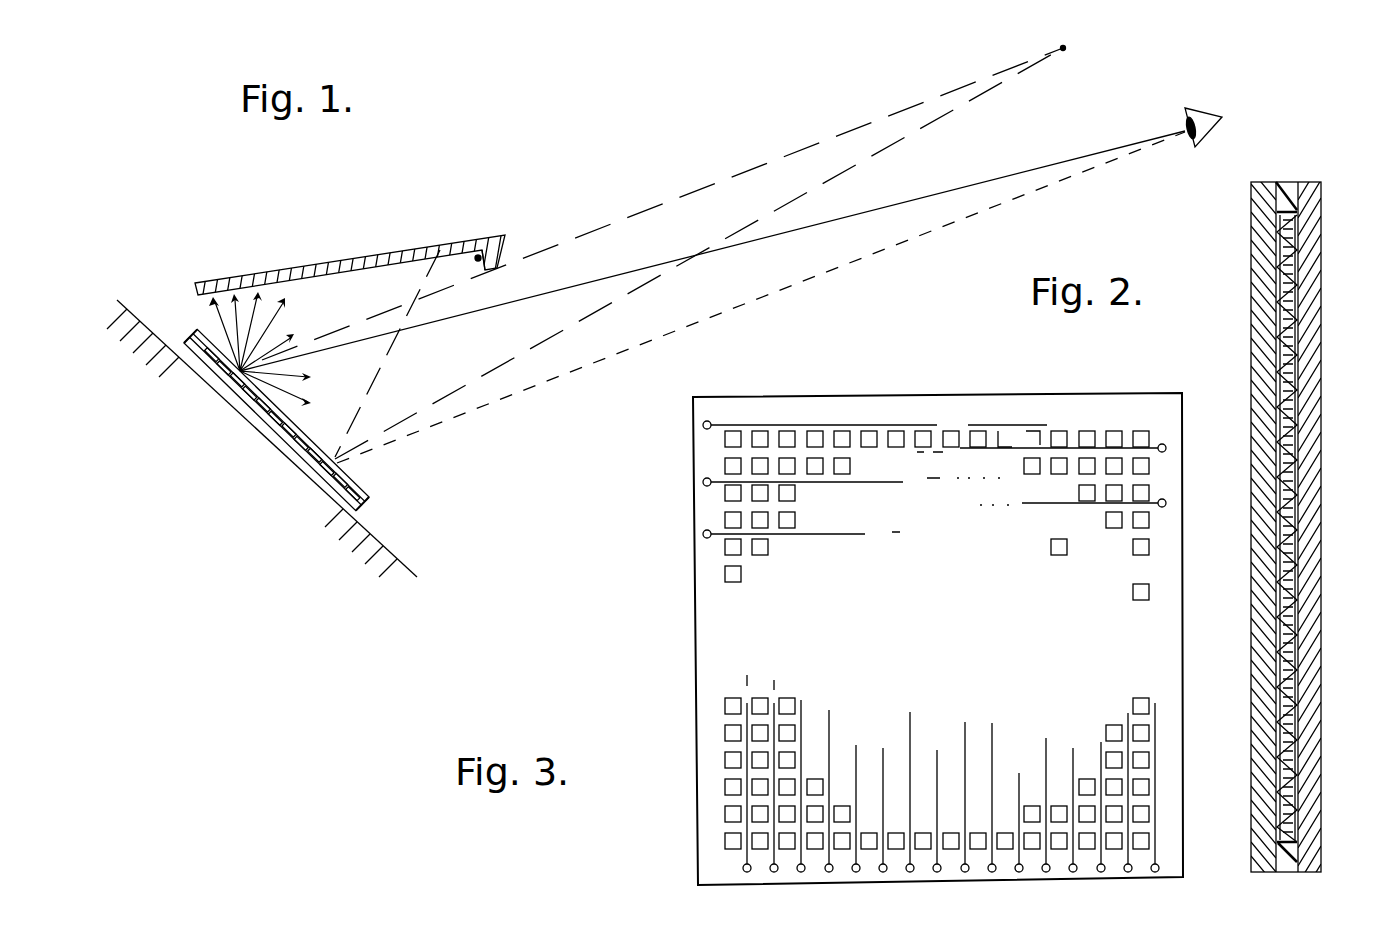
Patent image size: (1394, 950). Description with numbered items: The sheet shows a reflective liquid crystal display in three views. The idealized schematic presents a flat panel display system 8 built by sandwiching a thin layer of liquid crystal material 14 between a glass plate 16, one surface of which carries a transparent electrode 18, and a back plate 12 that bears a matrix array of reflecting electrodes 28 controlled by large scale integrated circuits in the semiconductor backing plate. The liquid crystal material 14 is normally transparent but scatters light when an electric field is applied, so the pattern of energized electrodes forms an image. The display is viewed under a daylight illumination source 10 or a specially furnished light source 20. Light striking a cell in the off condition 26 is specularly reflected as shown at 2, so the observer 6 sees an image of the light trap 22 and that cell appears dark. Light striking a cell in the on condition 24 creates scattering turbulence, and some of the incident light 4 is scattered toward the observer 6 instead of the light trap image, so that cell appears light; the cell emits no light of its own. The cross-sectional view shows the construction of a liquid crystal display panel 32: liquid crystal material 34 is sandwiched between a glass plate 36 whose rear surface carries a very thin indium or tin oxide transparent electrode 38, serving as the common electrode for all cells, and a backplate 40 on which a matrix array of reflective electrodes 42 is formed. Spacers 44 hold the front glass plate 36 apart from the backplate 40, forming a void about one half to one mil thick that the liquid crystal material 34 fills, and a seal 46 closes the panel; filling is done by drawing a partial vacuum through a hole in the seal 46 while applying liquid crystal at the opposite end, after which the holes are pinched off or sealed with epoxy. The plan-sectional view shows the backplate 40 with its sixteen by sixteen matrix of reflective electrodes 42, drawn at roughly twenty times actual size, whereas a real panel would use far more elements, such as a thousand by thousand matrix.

In FIG. 1, the specularly reflected light 2 is at (815, 282).
In FIG. 1, the incident light 4 is at (945, 192).
In FIG. 1, the observer 6 is at (1205, 115).
In FIG. 1, the flat panel display system 8 is at (690, 170).
In FIG. 1, the daylight illumination source 10 is at (1063, 48).
In FIG. 1, the back plate 12 is at (290, 453).
In FIG. 1, the liquid crystal material 14 is at (197, 335).
In FIG. 1, the glass plate 16 is at (317, 435).
In FIG. 1, the transparent electrode 18 is at (362, 495).
In FIG. 1, the specially furnished light source 20 is at (487, 248).
In FIG. 1, the light trap 22 is at (345, 266).
In FIG. 1, the cell in the on condition 24 is at (230, 375).
In FIG. 1, the cell in the off condition 26 is at (312, 472).
In FIG. 1, the reflecting electrodes 28 is at (257, 423).
In FIG. 2, the liquid crystal display panel 32 is at (1340, 318).
In FIG. 2, the liquid crystal material 34 is at (1277, 338).
In FIG. 2, the glass plate 36 is at (1255, 230).
In FIG. 2, the transparent electrode 38 is at (1275, 538).
In FIG. 2, the backplate 40 is at (1321, 420).
In FIG. 3, the backplate 40 is at (694, 641).
In FIG. 2, the reflective electrodes 42 is at (1298, 617).
In FIG. 3, the reflective electrodes 42 is at (797, 518).
In FIG. 2, the spacers 44 is at (1292, 492).
In FIG. 2, the seal 46 is at (1300, 850).